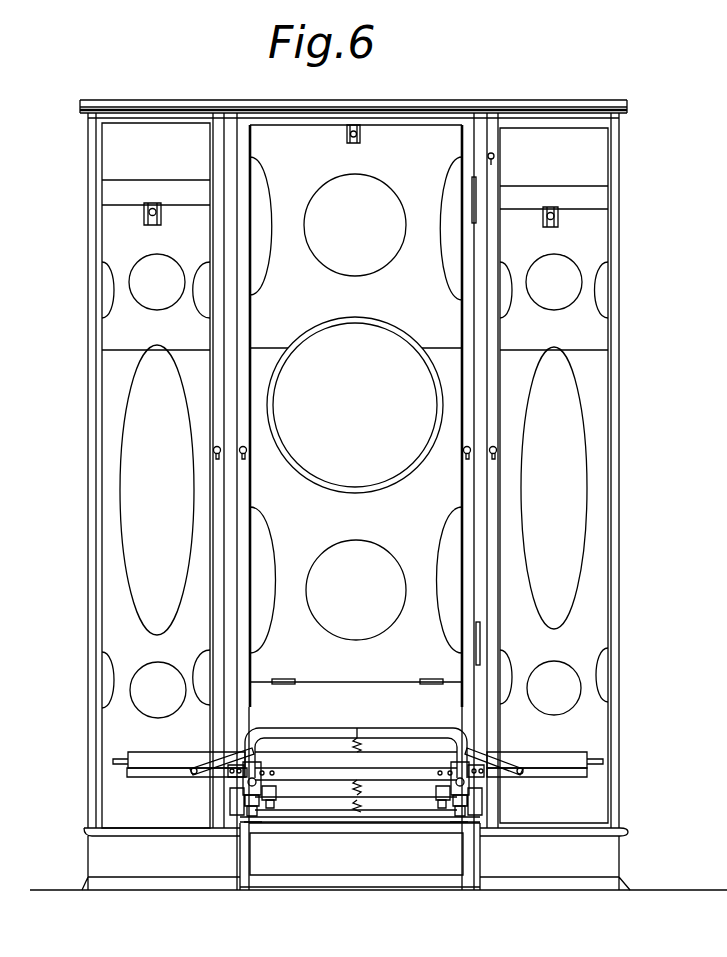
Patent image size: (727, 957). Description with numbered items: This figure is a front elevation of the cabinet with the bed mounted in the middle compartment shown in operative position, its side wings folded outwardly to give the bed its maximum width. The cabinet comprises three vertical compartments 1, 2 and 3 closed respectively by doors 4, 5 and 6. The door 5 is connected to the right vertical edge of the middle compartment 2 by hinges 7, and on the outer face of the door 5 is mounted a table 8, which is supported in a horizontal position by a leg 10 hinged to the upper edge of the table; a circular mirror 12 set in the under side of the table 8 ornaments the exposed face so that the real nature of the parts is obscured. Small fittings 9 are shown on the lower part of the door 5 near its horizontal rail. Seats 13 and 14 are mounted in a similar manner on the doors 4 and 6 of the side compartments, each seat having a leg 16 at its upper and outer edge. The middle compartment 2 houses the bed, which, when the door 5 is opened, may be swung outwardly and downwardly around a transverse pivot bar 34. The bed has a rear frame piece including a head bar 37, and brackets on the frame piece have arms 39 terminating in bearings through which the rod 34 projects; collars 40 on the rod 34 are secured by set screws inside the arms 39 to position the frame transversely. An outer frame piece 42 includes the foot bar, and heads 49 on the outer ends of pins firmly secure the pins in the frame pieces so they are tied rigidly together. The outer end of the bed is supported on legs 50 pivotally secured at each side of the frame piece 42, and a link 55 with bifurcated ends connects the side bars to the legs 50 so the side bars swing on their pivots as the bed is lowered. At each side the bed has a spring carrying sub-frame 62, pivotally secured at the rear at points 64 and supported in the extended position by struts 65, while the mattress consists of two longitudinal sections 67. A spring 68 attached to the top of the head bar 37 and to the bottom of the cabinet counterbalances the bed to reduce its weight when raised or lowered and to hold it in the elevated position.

The vertical compartment 1 is at (146, 113).
The middle compartment 2 is at (302, 116).
The vertical compartment 3 is at (520, 113).
The door 4 is at (88, 458).
The door 5 is at (355, 416).
The door 6 is at (596, 800).
The hinge 7 is at (478, 192).
The table 8 is at (356, 590).
The hinge 9 is at (421, 681).
The leg 10 is at (355, 235).
The circular mirror 12 is at (355, 405).
The seat 13 is at (157, 490).
The seat 14 is at (554, 488).
The leg 16 is at (355, 486).
The transverse pivot bar 34 is at (360, 808).
The head bar 37 is at (298, 731).
The arm 39 is at (436, 791).
The collar 40 is at (442, 806).
The outer frame piece 42 is at (311, 771).
The head 49 is at (476, 784).
The leg 50 is at (247, 856).
The link 55 is at (468, 807).
The spring carrying sub-frame 62 is at (551, 777).
The pivot point 64 is at (470, 762).
The strut 65 is at (499, 761).
The mattress section 67 is at (561, 756).
The spring 68 is at (362, 742).